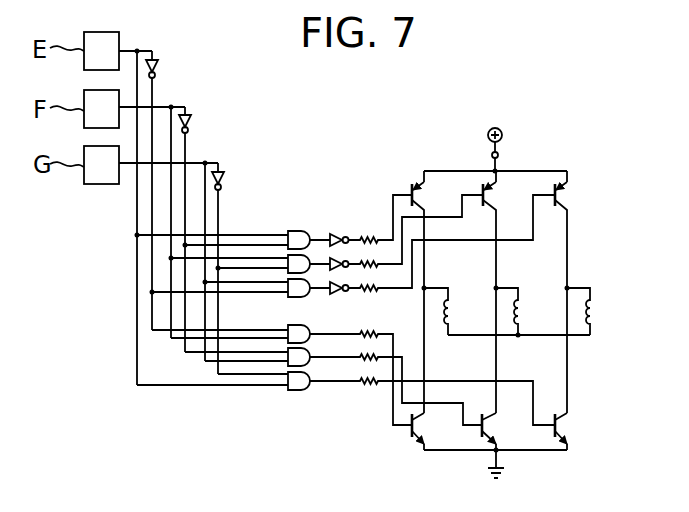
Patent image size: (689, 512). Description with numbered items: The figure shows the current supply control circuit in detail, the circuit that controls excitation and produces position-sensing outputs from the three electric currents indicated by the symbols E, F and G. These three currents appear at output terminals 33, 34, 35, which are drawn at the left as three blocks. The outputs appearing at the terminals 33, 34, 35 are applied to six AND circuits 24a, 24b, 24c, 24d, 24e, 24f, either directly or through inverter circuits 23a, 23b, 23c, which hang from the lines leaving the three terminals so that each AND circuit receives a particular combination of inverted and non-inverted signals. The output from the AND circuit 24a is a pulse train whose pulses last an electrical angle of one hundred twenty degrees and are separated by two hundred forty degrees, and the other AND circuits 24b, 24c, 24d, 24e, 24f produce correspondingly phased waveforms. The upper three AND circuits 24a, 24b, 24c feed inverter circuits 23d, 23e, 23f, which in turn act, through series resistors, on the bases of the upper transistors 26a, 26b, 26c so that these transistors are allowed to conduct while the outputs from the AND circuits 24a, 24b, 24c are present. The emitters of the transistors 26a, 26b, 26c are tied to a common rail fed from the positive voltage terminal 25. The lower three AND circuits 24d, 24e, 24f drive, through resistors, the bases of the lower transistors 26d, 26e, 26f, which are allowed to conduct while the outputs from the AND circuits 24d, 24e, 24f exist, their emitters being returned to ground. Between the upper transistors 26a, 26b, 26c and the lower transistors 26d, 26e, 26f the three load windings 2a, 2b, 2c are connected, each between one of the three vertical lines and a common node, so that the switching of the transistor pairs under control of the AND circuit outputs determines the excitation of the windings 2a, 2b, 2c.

The output terminal 33 is at (121, 47).
The output terminal 34 is at (120, 107).
The output terminal 35 is at (120, 168).
The inverter circuit 23a is at (160, 68).
The inverter circuit 23b is at (192, 127).
The inverter circuit 23c is at (224, 176).
The inverter circuit 23d is at (331, 235).
The inverter circuit 23e is at (341, 258).
The inverter circuit 23f is at (343, 293).
The AND circuit 24a is at (297, 228).
The AND circuit 24b is at (292, 257).
The AND circuit 24c is at (298, 299).
The AND circuit 24d is at (291, 326).
The AND circuit 24e is at (306, 366).
The AND circuit 24f is at (298, 392).
The positive voltage terminal 25 is at (502, 152).
The transistor 26a is at (428, 192).
The transistor 26b is at (497, 193).
The transistor 26c is at (568, 200).
The transistor 26d is at (427, 428).
The transistor 26e is at (497, 430).
The transistor 26f is at (568, 427).
The stator winding 2a is at (452, 310).
The stator winding 2b is at (521, 310).
The stator winding 2c is at (595, 308).